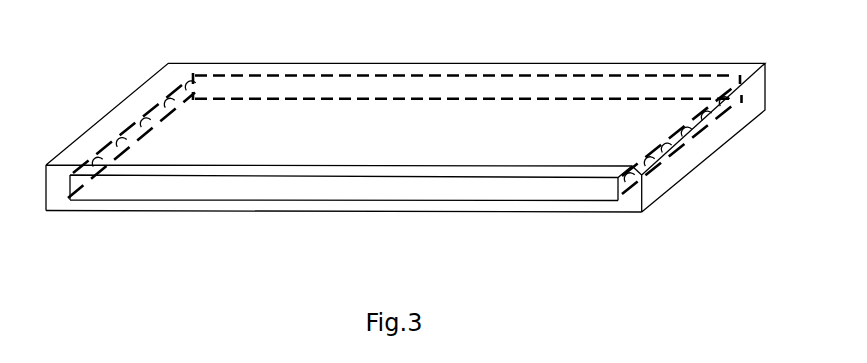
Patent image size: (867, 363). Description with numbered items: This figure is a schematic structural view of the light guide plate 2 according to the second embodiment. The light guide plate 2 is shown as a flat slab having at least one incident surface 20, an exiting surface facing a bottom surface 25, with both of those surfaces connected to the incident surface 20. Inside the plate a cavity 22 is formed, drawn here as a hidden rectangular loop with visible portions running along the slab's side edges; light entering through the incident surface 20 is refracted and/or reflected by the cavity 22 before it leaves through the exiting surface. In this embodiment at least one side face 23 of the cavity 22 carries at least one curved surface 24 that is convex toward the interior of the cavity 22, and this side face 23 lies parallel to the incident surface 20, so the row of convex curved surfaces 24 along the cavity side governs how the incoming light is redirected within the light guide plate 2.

The light guide plate 2 is at (160, 56).
The incident surface 20 is at (147, 98).
The cavity 22 is at (438, 192).
The side face 23 is at (160, 122).
The curved surface 24 is at (80, 184).
The bottom surface 25 is at (485, 211).